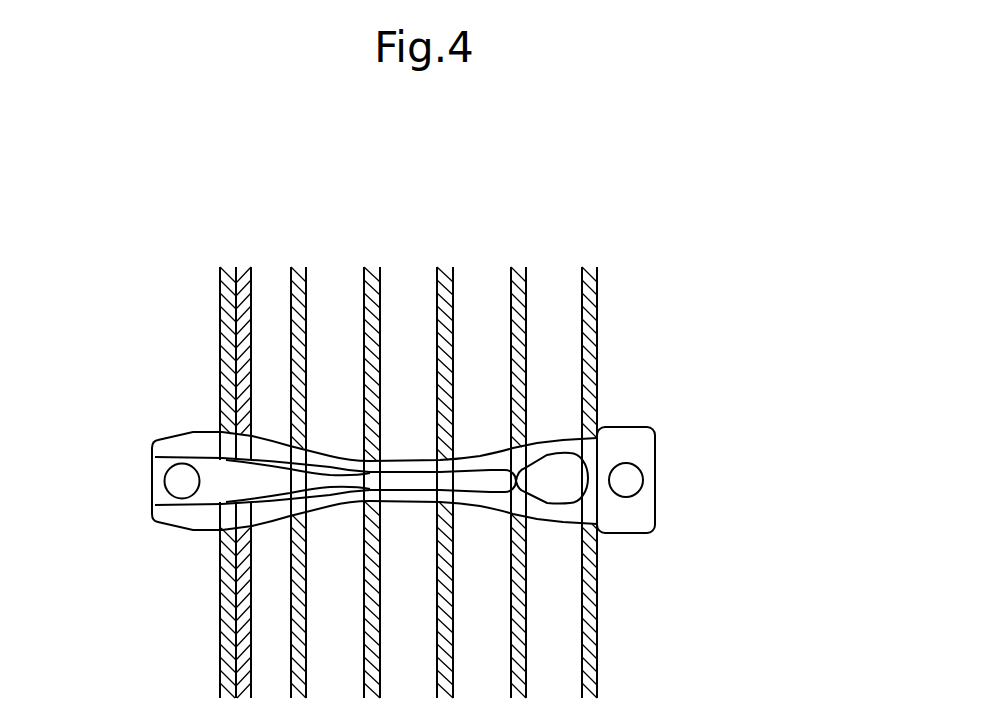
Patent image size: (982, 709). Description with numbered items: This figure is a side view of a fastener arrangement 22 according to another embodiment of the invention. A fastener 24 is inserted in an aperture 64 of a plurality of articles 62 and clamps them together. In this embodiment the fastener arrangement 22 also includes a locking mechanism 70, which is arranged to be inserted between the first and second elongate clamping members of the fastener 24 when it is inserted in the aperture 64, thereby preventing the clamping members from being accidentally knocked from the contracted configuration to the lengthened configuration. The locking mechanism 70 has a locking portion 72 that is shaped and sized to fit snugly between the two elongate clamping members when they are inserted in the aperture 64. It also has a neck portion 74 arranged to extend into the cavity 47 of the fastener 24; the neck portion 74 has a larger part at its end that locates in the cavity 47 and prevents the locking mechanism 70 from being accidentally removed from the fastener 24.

The fastener arrangement 22 is at (772, 359).
The articles 62 is at (470, 238).
The aperture 64 is at (611, 409).
The fastener 24 is at (684, 526).
The locking mechanism 70 is at (129, 511).
The locking portion 72 is at (227, 492).
The neck portion 74 is at (428, 482).
The cavity 47 is at (556, 485).